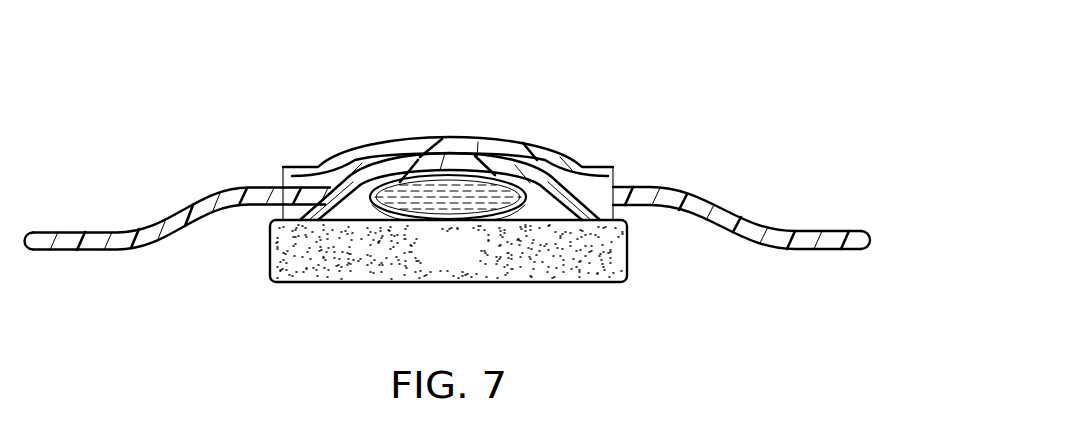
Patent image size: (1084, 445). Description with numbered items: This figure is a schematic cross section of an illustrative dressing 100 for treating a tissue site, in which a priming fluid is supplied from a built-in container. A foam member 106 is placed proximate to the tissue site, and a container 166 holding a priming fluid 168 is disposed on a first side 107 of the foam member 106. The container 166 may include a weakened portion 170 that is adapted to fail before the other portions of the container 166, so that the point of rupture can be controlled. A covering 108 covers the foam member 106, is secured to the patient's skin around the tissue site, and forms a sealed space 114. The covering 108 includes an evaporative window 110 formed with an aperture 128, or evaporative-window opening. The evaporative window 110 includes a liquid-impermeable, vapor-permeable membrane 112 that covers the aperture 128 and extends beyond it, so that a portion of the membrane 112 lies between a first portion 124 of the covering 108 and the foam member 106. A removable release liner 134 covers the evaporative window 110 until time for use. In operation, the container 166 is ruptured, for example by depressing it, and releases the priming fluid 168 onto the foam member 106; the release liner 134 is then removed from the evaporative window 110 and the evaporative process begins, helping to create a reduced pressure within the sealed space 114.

The dressing 100 is at (666, 82).
The foam member 106 is at (470, 263).
The first side 107 is at (540, 210).
The covering 108 is at (699, 187).
The evaporative window 110 is at (345, 153).
The liquid-impermeable, vapor-permeable membrane 112 is at (280, 215).
The sealed space 114 is at (586, 262).
The first portion 124 is at (778, 228).
The aperture 128 is at (555, 157).
The removable release liner 134 is at (512, 146).
The container 166 is at (377, 211).
The priming fluid 168 is at (413, 187).
The weakened portion 170 is at (450, 200).